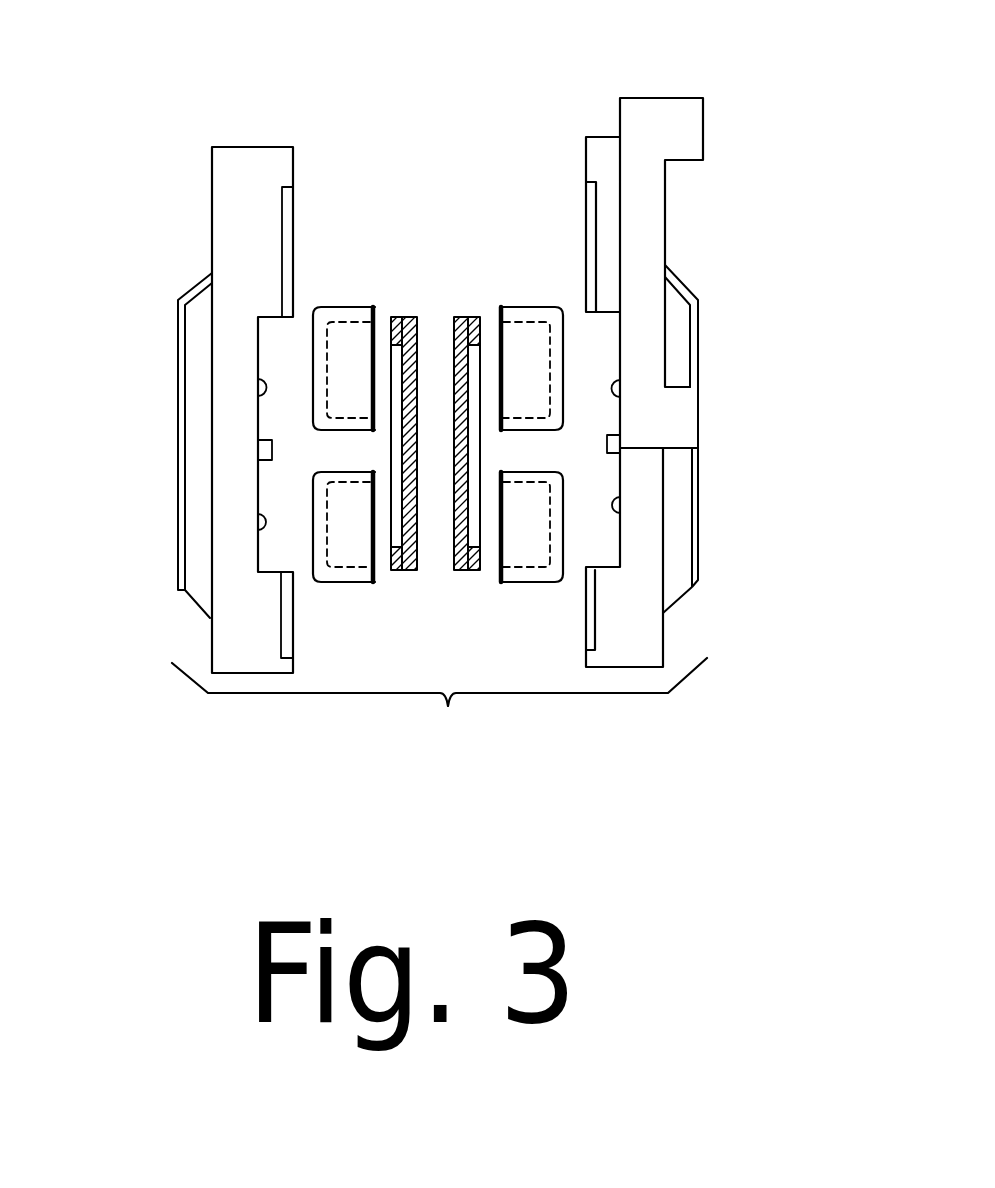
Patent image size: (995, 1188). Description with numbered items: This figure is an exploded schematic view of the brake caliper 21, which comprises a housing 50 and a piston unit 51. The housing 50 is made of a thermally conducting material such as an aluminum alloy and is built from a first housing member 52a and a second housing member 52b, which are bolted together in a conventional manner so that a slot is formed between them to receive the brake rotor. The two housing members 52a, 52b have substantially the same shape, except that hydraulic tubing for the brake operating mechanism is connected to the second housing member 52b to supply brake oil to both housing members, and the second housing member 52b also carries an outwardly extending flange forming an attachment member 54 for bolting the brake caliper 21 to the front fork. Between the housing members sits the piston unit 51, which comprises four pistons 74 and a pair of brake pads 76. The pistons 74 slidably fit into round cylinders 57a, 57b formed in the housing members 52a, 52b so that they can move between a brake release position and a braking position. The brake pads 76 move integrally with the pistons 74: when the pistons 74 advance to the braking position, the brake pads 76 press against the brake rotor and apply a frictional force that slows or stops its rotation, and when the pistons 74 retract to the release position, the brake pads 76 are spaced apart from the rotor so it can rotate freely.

The brake caliper 21 is at (750, 157).
The housing 50 is at (244, 140).
The piston unit 51 is at (438, 260).
The first housing member 52a is at (178, 349).
The second housing member 52b is at (698, 347).
The attachment member 54 is at (661, 97).
The round cylinders 57a is at (260, 528).
The round cylinders 57b is at (626, 398).
The pistons 74 is at (342, 306).
The brake pads 76 is at (404, 571).